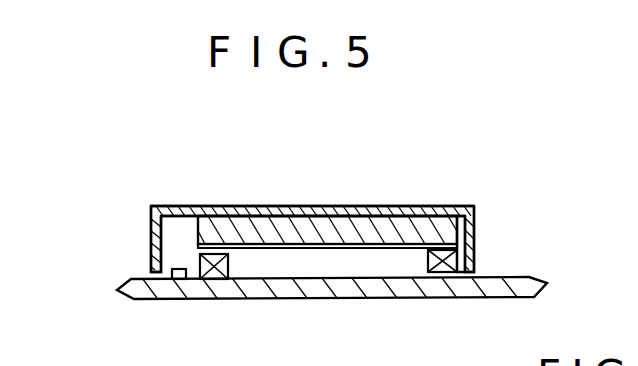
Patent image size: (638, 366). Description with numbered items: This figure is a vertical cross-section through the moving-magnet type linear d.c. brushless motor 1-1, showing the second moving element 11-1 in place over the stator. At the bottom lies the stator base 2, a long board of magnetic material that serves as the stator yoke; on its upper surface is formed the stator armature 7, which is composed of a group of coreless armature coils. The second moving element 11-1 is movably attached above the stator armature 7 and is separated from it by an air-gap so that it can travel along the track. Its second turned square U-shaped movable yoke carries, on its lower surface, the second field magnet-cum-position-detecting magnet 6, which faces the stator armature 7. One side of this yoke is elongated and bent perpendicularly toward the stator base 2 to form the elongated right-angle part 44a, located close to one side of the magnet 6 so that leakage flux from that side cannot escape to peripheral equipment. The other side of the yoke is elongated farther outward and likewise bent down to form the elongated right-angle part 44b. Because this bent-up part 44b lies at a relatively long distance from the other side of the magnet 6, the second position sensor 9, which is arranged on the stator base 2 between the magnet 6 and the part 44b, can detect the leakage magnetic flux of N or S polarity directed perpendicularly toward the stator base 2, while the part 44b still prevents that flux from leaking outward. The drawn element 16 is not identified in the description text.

The moving-magnet type linear d.c. brushless motor 1-1 is at (412, 188).
The second moving element 11-1 is at (473, 204).
The stator base 2 is at (332, 293).
The second field magnet-cum-position-detecting magnet 6 is at (359, 222).
The stator armature 7 is at (261, 268).
The second position sensor 9 is at (178, 281).
The top plate 16 is at (303, 206).
The elongated right-angle part 44a is at (472, 229).
The elongated right-angle part 44b is at (151, 248).